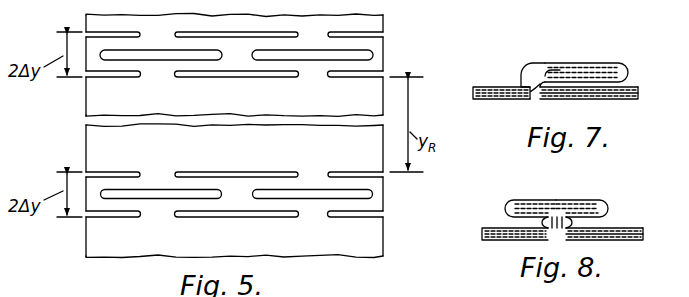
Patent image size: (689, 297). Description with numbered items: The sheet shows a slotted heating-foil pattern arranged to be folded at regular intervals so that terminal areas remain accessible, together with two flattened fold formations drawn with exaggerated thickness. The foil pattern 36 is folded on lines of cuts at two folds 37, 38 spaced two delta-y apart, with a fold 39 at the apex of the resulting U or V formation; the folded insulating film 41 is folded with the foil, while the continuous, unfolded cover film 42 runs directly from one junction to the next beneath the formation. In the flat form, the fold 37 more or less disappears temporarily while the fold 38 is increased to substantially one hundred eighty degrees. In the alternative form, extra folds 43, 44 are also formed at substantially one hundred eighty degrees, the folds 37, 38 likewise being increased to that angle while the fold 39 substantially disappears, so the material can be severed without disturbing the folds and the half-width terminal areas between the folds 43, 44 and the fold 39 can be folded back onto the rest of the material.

In FIG. 7, the foil pattern 36 is at (474, 89).
In FIG. 8, the foil pattern 36 is at (481, 232).
In FIG. 7, the fold 37 is at (529, 98).
In FIG. 8, the fold 37 is at (549, 238).
In FIG. 7, the fold 38 is at (538, 101).
In FIG. 8, the fold 38 is at (558, 240).
In FIG. 5, the fold at the apex 39 is at (224, 164).
In FIG. 7, the fold at the apex 39 is at (627, 77).
In FIG. 7, the folded insulating film 41 is at (639, 90).
In FIG. 8, the folded insulating film 41 is at (637, 229).
In FIG. 7, the continuous unfolded cover film 42 is at (629, 100).
In FIG. 8, the continuous unfolded cover film 42 is at (644, 236).
In FIG. 8, the extra fold 43 is at (506, 212).
In FIG. 8, the extra fold 44 is at (603, 211).